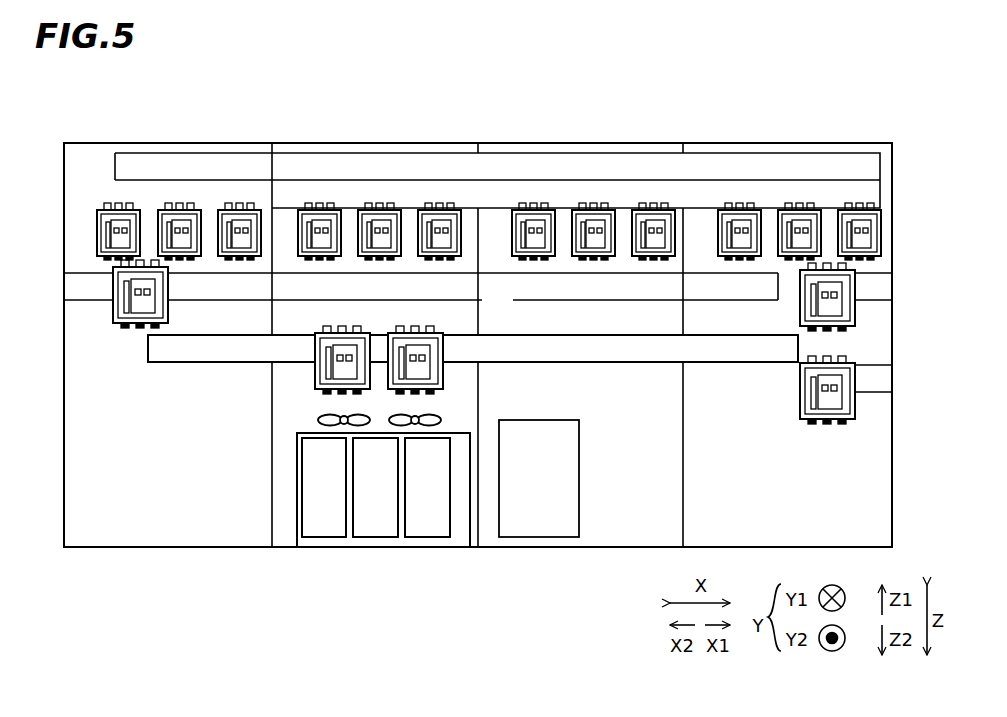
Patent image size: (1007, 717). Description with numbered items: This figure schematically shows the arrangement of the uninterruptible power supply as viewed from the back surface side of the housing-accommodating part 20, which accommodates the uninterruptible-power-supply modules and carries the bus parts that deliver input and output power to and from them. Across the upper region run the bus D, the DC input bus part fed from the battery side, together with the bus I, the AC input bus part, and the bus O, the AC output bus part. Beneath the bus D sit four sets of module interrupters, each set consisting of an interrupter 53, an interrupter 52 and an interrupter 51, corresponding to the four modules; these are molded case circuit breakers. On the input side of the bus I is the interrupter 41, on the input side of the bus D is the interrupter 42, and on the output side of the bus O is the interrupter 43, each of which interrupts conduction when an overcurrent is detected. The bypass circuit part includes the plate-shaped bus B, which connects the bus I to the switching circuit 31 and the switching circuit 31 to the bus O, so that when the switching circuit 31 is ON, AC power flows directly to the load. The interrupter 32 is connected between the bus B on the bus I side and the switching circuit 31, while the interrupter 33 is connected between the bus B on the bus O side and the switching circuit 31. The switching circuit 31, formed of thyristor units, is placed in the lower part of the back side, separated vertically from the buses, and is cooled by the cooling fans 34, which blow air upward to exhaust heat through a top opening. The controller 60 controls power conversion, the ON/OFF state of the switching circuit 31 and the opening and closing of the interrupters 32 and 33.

The housing-accommodating part 20 is at (886, 141).
The bus D is at (471, 150).
The interrupter 53 is at (113, 205).
The interrupter 52 is at (174, 205).
The interrupter 51 is at (235, 205).
The bus B is at (750, 363).
The interrupter 43 is at (132, 334).
The interrupter 33 is at (304, 324).
The interrupter 32 is at (446, 326).
The interrupter 42 is at (864, 313).
The interrupter 41 is at (864, 404).
The cooling fans 34 is at (306, 420).
The switching circuit 31 is at (323, 538).
The controller 60 is at (579, 448).
The bus I is at (491, 209).
The bus O is at (649, 302).